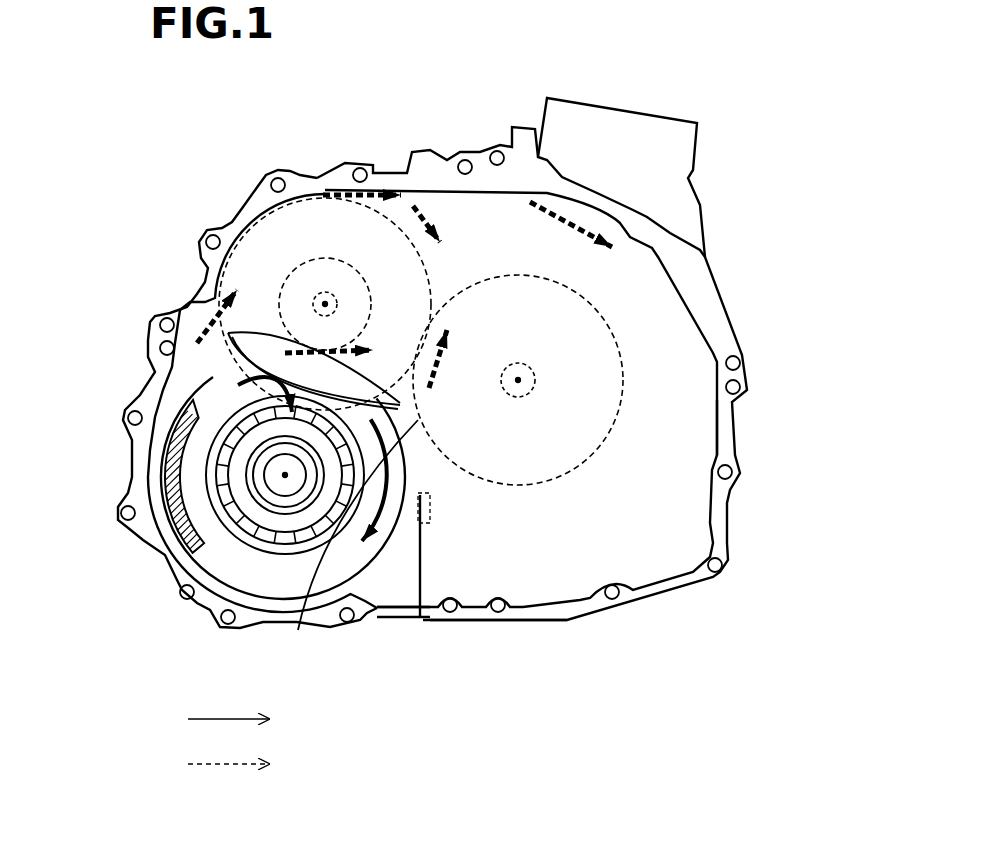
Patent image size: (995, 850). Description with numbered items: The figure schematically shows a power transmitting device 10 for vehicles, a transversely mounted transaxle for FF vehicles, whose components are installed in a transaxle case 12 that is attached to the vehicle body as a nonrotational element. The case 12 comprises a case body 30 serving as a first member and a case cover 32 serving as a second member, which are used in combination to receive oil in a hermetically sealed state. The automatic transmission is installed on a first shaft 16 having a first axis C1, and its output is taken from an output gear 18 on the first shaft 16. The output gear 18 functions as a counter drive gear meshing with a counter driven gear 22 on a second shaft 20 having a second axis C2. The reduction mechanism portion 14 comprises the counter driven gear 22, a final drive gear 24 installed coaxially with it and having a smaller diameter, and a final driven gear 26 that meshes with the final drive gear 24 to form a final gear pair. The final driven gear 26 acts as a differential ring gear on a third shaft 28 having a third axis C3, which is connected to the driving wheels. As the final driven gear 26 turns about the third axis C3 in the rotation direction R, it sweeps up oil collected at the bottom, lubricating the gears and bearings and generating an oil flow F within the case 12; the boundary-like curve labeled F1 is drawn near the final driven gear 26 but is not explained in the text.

The power transmitting device 10 is at (395, 97).
The transaxle case 12 is at (498, 683).
The reduction mechanism portion 14 is at (85, 233).
The first shaft 16 is at (535, 389).
The output gear 18 is at (580, 317).
The second shaft 20 is at (297, 263).
The counter driven gear 22 is at (250, 352).
The final drive gear 24 is at (280, 286).
The final driven gear 26 is at (212, 358).
The third shaft 28 is at (270, 480).
The case body 30 is at (408, 612).
The case cover 32 is at (477, 583).
The first axis C1 is at (518, 380).
The second axis C2 is at (325, 302).
The third axis C3 is at (283, 473).
The rotation direction R is at (170, 490).
The oil flow F is at (175, 708).
The oil flow boundary F1 is at (298, 630).